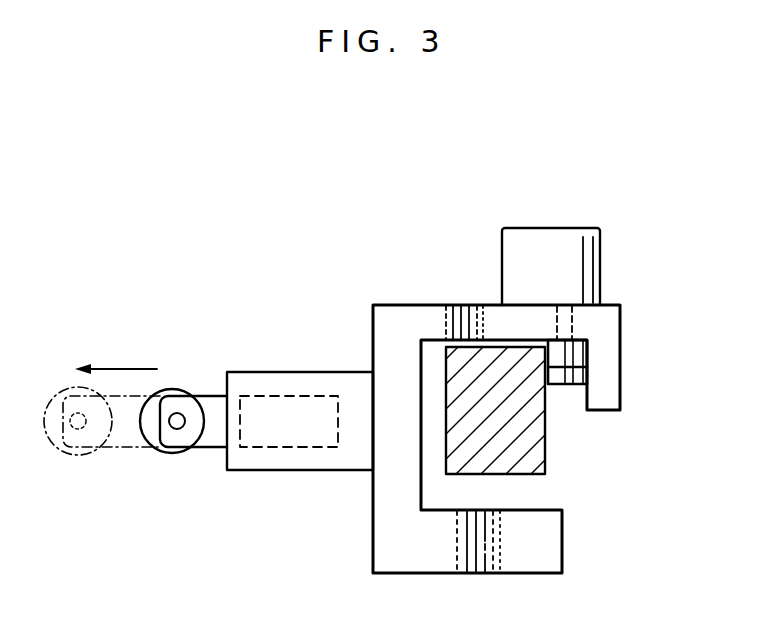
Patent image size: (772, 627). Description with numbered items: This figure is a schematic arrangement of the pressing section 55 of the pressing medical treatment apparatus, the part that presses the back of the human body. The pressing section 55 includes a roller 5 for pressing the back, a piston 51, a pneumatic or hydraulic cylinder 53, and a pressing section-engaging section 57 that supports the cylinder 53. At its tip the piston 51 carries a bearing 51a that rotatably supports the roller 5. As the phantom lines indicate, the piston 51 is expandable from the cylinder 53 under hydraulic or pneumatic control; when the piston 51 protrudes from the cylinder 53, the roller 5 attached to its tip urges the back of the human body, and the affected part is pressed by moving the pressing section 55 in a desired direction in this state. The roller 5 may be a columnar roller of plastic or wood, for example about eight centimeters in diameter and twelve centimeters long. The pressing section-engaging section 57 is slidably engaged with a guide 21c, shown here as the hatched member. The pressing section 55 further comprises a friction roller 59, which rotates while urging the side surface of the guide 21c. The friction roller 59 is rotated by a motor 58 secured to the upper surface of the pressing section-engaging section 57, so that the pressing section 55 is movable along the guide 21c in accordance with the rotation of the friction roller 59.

The pressing section 55 is at (312, 236).
The roller 5 is at (177, 384).
The piston 51 is at (212, 403).
The bearing 51a is at (171, 425).
The cylinder 53 is at (287, 472).
The pressing section-engaging section 57 is at (622, 352).
The motor 58 is at (572, 232).
The friction roller 59 is at (560, 386).
The guide 21c is at (533, 450).